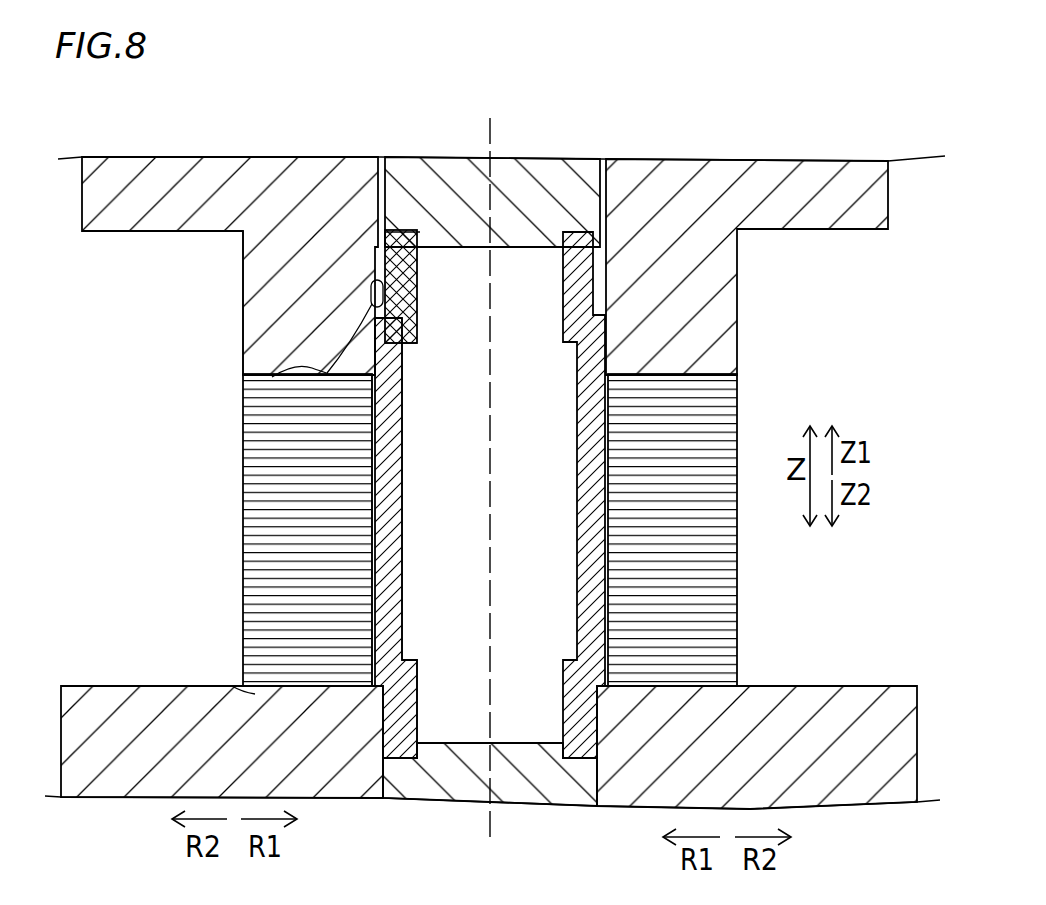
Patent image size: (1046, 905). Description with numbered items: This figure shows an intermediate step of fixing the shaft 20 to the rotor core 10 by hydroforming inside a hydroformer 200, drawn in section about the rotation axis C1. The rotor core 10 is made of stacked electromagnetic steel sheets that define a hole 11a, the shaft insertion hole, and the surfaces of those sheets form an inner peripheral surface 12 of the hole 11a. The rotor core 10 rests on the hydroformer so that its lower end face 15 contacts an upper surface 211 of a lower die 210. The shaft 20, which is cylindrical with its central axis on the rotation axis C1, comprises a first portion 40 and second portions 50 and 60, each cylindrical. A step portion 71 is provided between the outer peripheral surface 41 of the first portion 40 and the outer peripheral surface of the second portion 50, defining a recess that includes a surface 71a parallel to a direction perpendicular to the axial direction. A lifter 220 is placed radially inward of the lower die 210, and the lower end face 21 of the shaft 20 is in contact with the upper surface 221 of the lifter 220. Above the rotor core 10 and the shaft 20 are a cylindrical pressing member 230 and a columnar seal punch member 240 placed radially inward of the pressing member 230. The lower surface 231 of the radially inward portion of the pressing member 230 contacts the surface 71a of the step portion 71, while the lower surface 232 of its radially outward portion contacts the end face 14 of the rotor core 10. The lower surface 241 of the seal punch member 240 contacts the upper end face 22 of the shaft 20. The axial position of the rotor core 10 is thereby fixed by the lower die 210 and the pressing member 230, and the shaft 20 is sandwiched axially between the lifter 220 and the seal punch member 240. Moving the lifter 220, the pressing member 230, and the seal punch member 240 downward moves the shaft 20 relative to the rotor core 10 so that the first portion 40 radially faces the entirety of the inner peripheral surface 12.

The hydroformer 200 is at (150, 116).
The rotation axis C1 is at (497, 462).
The pressing member 230 is at (267, 170).
The lower surface of radially outward portion of pressing member 232 is at (240, 388).
The seal punch member 240 is at (447, 172).
The upper end face of shaft 22 is at (427, 247).
The lower surface of seal punch member 241 is at (420, 284).
The step portion 71 is at (420, 304).
The surface of step portion 71a is at (420, 338).
The lower surface of radially inward portion of pressing member 231 is at (397, 362).
The second portion 50 is at (552, 284).
The first portion 40 is at (410, 431).
The hole 11a is at (405, 491).
The outer peripheral surface of first portion 41 is at (405, 546).
The inner peripheral surface of rotor core 12 is at (400, 601).
The second portion 60 is at (420, 688).
The upper surface of lifter 221 is at (412, 725).
The shaft 20 is at (530, 452).
The lifter 220 is at (473, 780).
The lower end face of shaft 21 is at (423, 774).
The lower die 210 is at (147, 700).
The upper surface of lower die 211 is at (205, 690).
The rotor core 10 is at (217, 494).
The end face of rotor core 14 is at (272, 377).
The end face of rotor core 15 is at (232, 686).